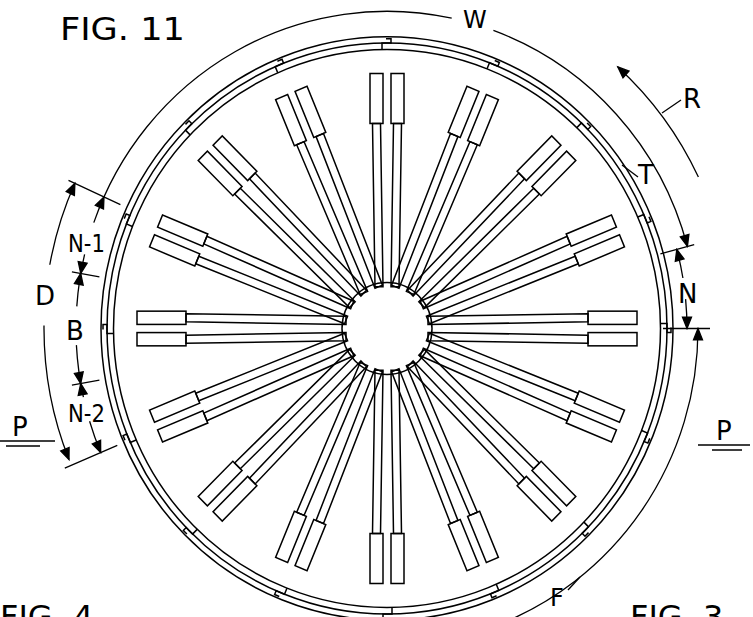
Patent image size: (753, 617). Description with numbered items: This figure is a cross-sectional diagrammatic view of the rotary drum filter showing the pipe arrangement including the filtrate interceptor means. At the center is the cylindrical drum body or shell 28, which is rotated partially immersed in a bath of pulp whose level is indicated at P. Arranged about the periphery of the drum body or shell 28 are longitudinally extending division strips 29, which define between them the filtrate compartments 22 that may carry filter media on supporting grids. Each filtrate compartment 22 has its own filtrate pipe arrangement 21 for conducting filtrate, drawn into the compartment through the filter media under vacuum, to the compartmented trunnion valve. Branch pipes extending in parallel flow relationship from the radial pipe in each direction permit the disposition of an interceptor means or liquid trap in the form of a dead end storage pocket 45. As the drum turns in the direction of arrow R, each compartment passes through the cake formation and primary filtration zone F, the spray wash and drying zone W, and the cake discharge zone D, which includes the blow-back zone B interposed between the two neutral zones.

The filtrate pipe arrangement 21 is at (548, 316).
The filtrate compartment 22 is at (524, 84).
The drum body or shell 28 is at (530, 88).
The division strip 29 is at (401, 41).
The dead end storage pocket 45 is at (613, 304).